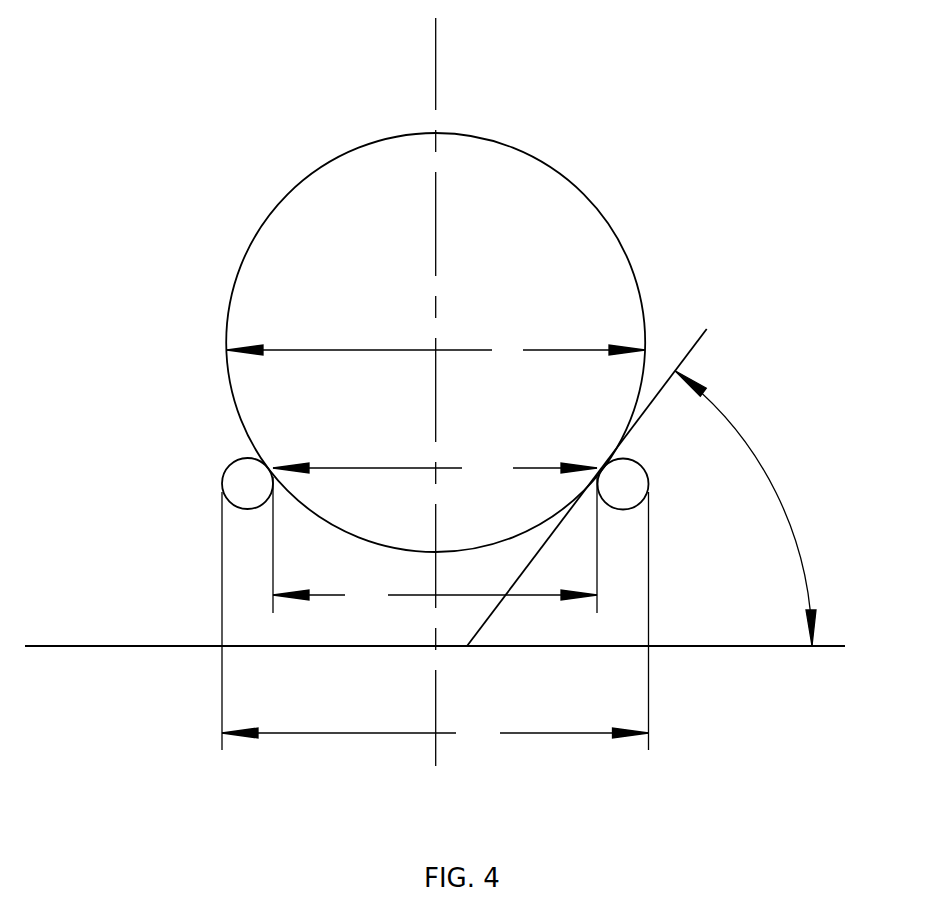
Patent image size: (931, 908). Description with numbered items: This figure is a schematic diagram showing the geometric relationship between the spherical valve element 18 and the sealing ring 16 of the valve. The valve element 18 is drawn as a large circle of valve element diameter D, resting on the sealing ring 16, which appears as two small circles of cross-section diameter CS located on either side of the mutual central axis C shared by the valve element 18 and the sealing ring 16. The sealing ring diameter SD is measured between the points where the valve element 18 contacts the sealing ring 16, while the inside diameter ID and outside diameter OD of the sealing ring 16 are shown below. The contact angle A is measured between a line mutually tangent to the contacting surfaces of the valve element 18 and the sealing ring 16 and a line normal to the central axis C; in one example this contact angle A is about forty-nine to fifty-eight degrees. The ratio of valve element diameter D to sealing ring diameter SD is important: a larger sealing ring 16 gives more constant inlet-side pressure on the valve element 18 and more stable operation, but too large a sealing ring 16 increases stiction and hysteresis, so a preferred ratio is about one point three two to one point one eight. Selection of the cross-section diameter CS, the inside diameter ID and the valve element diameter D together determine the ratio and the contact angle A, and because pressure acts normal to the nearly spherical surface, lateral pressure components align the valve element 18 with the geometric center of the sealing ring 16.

The sealing ring 16 is at (638, 482).
The valve element 18 is at (572, 202).
The mutual central axis C is at (436, 64).
The sealing ring cross-section diameter CS is at (228, 466).
The valve element diameter D is at (436, 350).
The sealing ring diameter SD is at (435, 469).
The inside diameter ID is at (435, 545).
The O-ring outer diameter OD is at (435, 621).
The contact angle A is at (745, 508).